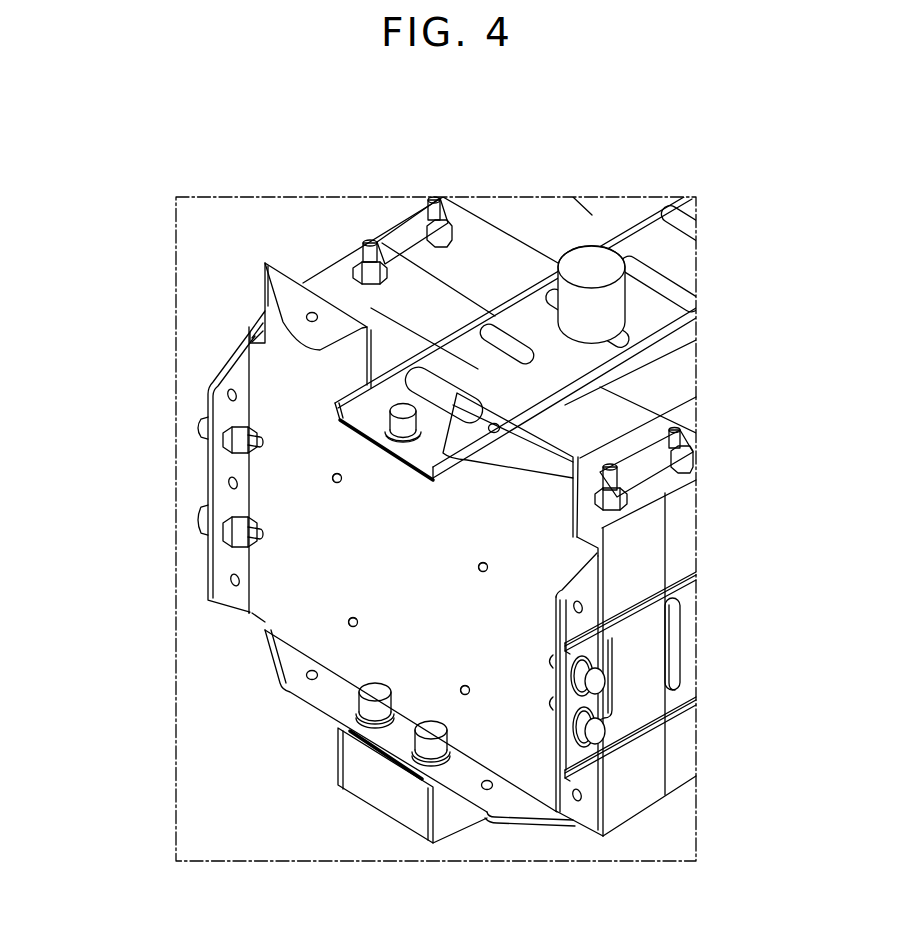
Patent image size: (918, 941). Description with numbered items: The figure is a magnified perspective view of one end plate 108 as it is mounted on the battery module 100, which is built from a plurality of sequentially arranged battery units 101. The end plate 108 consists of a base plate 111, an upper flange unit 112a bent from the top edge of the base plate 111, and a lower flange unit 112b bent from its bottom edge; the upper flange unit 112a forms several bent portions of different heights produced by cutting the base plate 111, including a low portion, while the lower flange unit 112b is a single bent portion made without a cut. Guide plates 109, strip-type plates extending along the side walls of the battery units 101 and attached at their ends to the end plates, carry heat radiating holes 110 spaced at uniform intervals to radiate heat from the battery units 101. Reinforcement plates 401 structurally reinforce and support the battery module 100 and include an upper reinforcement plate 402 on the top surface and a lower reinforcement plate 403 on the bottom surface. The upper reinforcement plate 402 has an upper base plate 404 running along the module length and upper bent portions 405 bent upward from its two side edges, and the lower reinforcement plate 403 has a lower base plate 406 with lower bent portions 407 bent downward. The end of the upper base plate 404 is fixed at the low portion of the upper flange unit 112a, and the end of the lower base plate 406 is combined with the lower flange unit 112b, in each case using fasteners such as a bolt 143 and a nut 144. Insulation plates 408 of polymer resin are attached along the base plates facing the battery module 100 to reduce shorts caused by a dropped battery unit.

The battery module 100 is at (718, 303).
The battery unit 101 is at (650, 568).
The end plate 108 is at (662, 616).
The guide plate 109 is at (640, 693).
The heat radiating hole 110 is at (673, 653).
The base plate 111 is at (523, 648).
The upper flange unit 112a is at (462, 470).
The lower flange unit 112b is at (667, 694).
The bolt 143 is at (418, 457).
The nut 144 is at (233, 440).
The reinforcement plate 401 is at (329, 537).
The upper reinforcement plate 402 is at (335, 412).
The lower reinforcement plate 403 is at (333, 733).
The upper base plate 404 is at (402, 404).
The upper bent portion 405 is at (447, 455).
The lower base plate 406 is at (403, 770).
The lower bent portion 407 is at (450, 825).
The insulation plate 408 is at (358, 433).